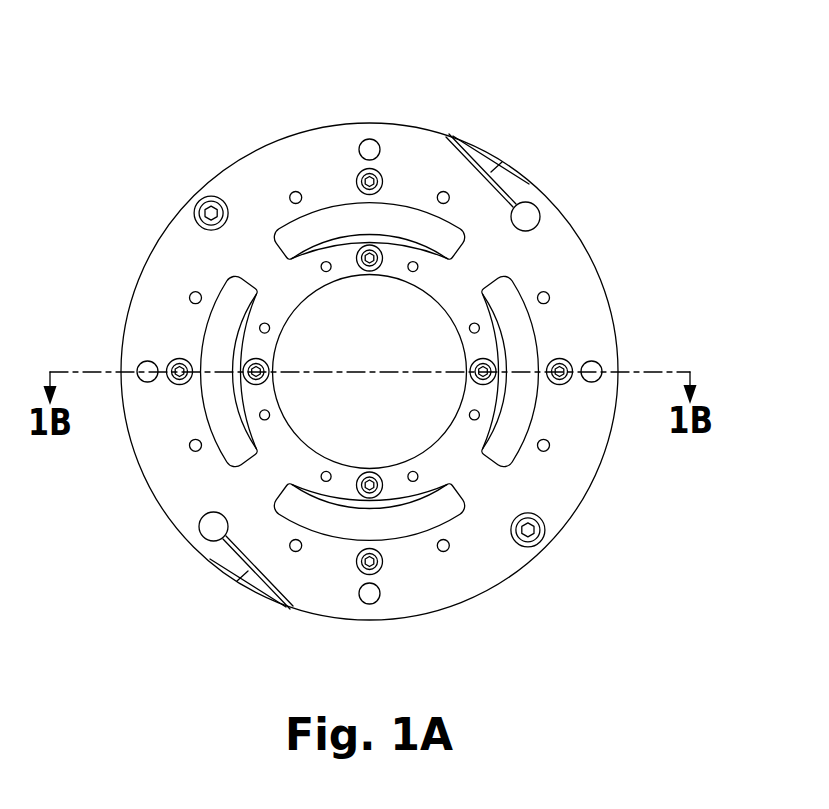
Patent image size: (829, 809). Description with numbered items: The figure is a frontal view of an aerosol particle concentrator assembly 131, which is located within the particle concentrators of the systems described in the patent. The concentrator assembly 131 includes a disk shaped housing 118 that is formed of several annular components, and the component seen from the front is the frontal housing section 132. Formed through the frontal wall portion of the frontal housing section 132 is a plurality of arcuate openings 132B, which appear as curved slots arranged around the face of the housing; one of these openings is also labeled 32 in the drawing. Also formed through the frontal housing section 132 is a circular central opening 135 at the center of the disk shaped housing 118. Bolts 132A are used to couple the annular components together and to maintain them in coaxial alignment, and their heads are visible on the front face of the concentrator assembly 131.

The concentrator assembly 131 is at (656, 286).
The circular central opening 135 is at (312, 448).
The arcuate slot 32 is at (403, 209).
The arcuate openings 132B is at (207, 332).
The bolts 132A is at (180, 385).
The frontal housing section 132 is at (482, 578).
The disk shaped housing 118 is at (337, 604).